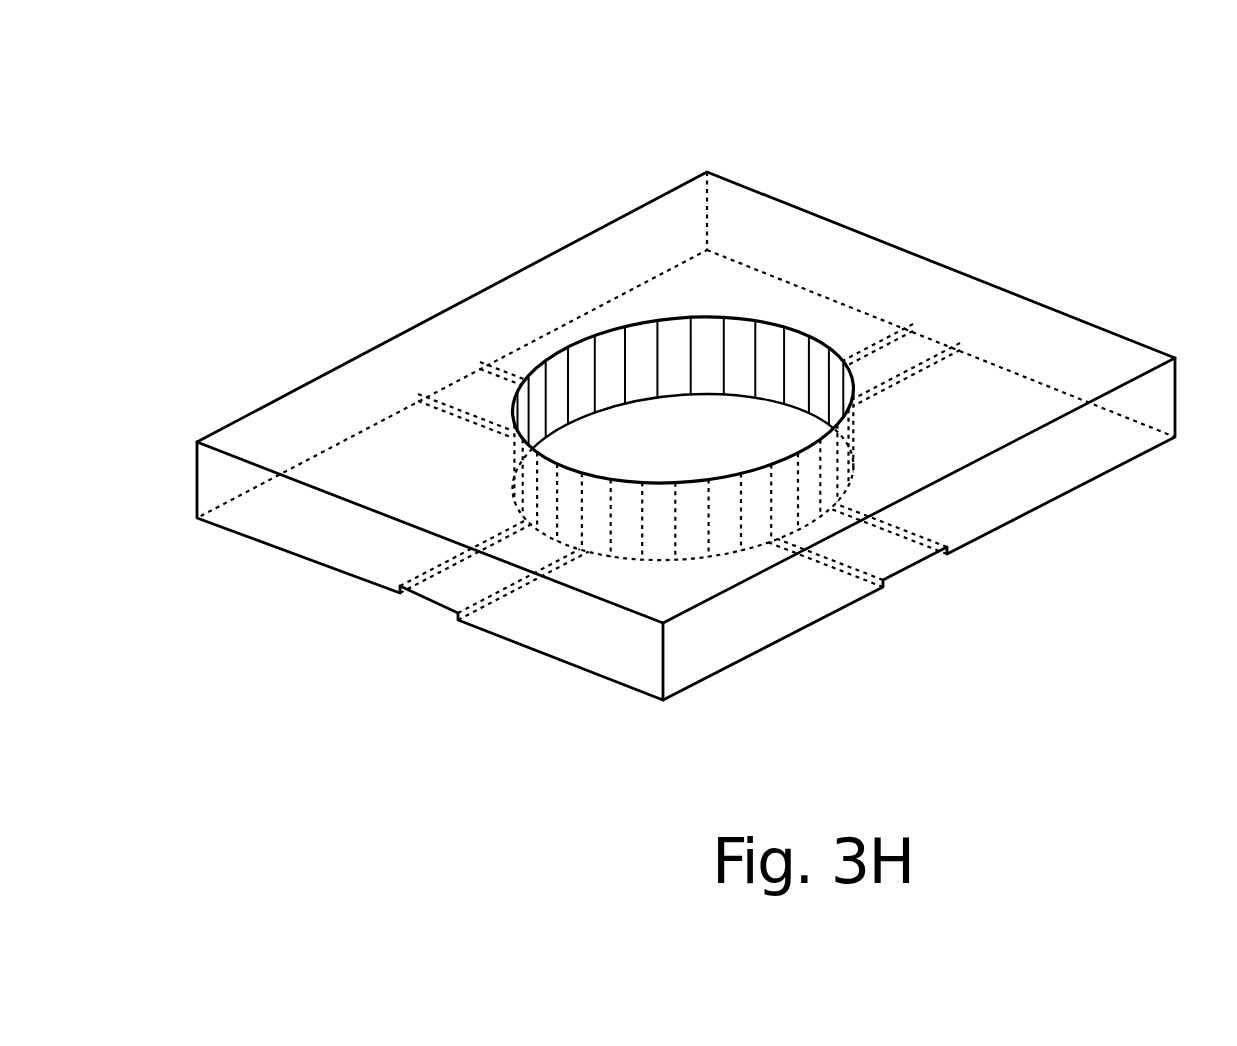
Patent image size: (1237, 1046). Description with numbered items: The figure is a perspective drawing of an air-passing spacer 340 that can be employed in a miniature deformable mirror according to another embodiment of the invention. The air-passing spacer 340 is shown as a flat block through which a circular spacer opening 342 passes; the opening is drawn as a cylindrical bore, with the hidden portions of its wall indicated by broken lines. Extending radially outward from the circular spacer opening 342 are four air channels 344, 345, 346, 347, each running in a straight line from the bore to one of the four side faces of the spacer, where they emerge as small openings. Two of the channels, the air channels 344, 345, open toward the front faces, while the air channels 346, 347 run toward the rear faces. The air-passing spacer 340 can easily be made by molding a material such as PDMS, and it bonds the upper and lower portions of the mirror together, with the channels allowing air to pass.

The air-passing spacer 340 is at (528, 88).
The circular spacer opening 342 is at (708, 412).
The air channel 344 is at (447, 605).
The air channel 345 is at (912, 565).
The air channel 346 is at (923, 345).
The air channel 347 is at (478, 385).